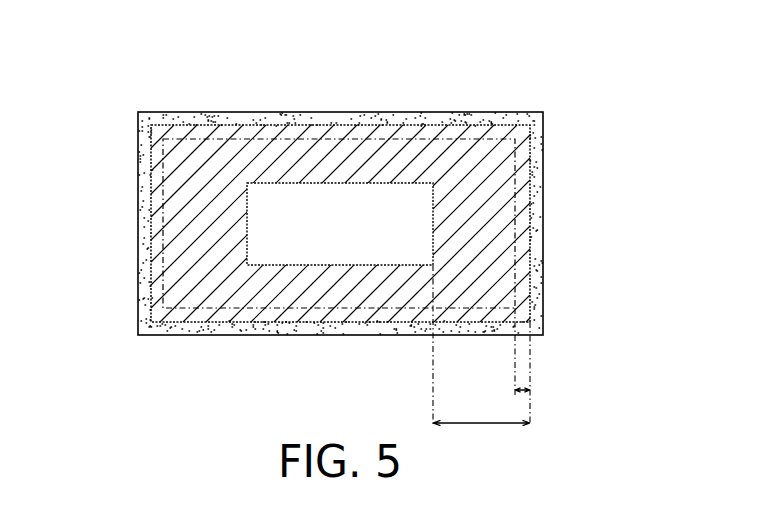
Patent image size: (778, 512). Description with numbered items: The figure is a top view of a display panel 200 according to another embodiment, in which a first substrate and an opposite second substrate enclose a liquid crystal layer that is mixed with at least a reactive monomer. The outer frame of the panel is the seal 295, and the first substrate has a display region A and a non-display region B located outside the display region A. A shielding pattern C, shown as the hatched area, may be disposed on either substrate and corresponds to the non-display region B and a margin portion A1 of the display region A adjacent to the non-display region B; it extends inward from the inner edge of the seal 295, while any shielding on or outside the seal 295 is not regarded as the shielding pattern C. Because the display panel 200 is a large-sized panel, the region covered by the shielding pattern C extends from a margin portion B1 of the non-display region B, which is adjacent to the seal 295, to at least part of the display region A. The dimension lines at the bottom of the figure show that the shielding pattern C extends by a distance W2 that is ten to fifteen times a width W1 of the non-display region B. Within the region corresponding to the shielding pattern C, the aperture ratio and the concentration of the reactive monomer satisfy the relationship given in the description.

The display panel 200 is at (58, 64).
The seal 295 is at (480, 113).
The shielding pattern C is at (264, 150).
The margin portion of the display region A1 is at (460, 156).
The margin portion of the non-display region B1 is at (539, 183).
The non-display region B is at (386, 321).
The display region A is at (475, 319).
The width of the non-display region W1 is at (514, 403).
The distance of shielding pattern extension W2 is at (481, 437).